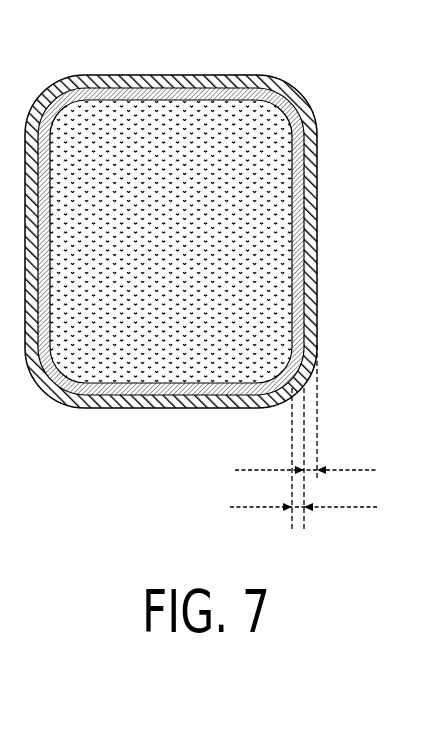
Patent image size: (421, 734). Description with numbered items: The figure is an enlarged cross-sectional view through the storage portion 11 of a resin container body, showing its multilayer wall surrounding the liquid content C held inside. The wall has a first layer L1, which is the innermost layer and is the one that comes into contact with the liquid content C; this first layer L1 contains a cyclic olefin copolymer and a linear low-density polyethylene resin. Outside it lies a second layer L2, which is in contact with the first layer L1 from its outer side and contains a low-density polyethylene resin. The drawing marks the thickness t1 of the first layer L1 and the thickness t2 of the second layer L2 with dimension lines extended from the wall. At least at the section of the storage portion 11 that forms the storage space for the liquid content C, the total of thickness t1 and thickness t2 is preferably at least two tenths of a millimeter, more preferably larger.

The storage portion 11 is at (193, 210).
The liquid content C is at (171, 241).
The first layer L1 is at (310, 112).
The second layer L2 is at (298, 93).
The thickness of the first layer t1 is at (303, 459).
The thickness of the second layer t2 is at (306, 412).